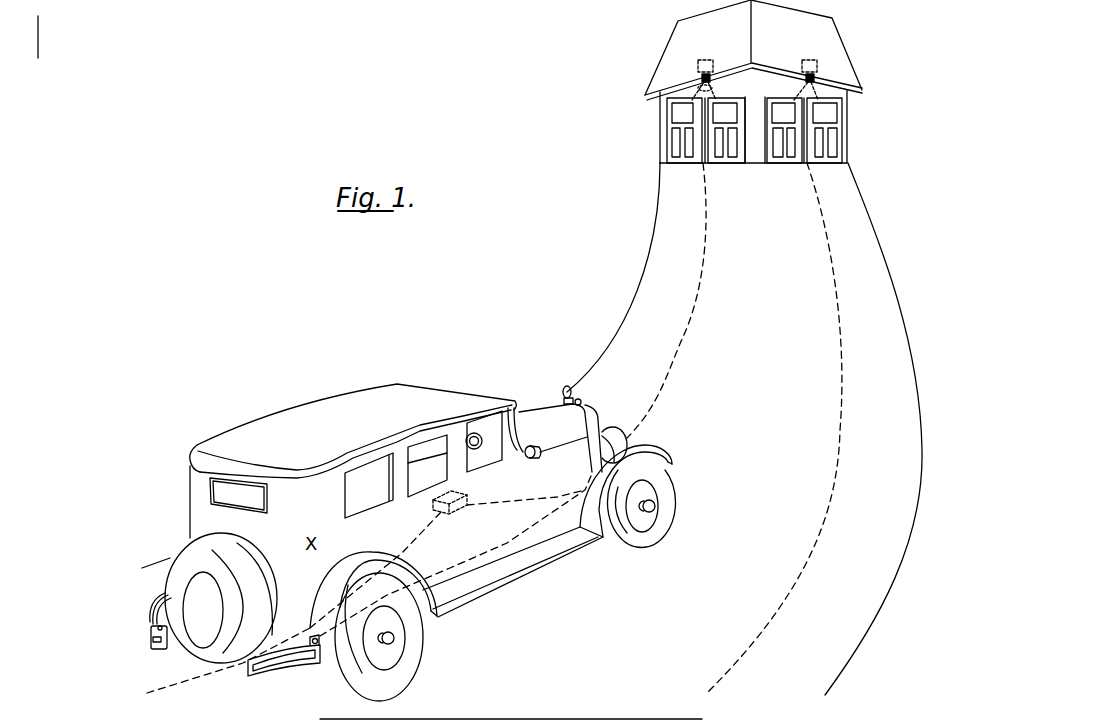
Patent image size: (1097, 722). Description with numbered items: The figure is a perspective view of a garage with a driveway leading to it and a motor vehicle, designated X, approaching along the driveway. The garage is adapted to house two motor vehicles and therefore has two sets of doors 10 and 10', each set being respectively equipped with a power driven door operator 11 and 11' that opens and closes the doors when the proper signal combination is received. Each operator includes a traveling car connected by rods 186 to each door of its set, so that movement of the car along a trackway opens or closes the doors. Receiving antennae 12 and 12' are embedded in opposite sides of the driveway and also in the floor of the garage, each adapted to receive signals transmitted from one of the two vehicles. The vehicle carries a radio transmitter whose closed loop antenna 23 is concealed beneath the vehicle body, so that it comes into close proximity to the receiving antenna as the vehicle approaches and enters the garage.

The set of doors 10 is at (746, 81).
The set of doors 10' is at (823, 126).
The door operator 11 is at (712, 69).
The door operator 11' is at (801, 70).
The rods 186 is at (716, 87).
The receiving antenna 12 is at (677, 300).
The receiving antenna 12' is at (787, 428).
The loop antenna 23 is at (483, 506).